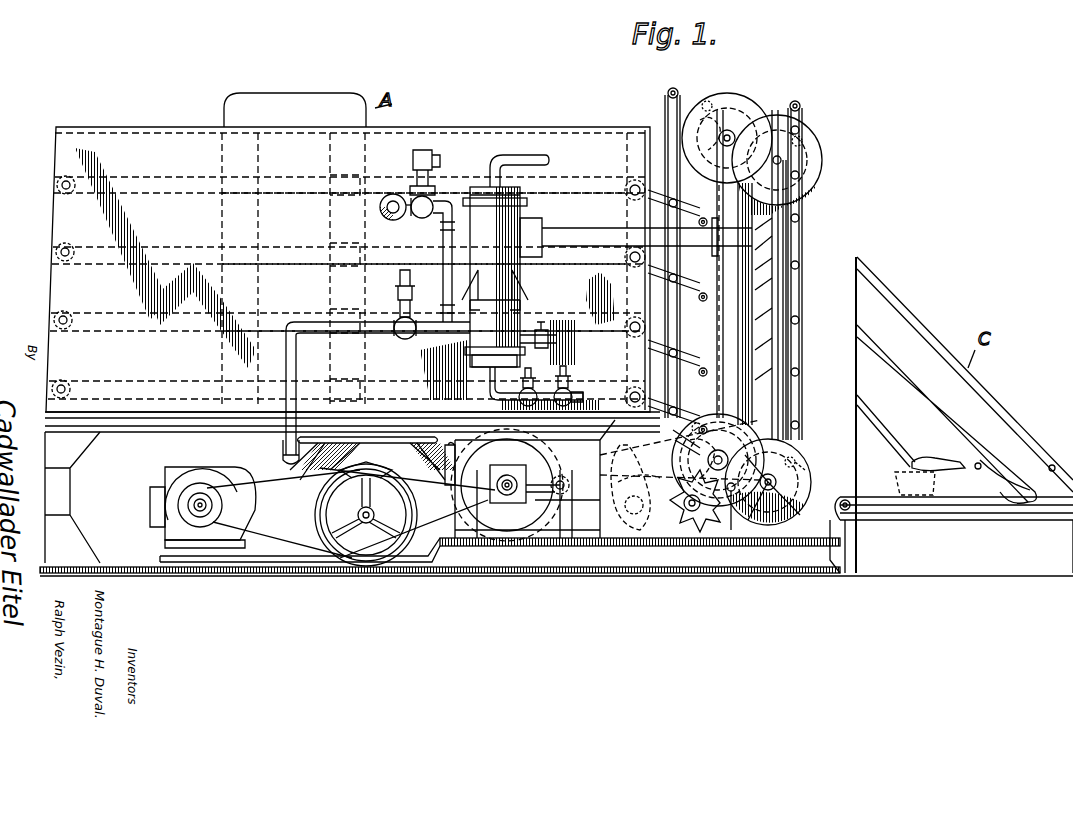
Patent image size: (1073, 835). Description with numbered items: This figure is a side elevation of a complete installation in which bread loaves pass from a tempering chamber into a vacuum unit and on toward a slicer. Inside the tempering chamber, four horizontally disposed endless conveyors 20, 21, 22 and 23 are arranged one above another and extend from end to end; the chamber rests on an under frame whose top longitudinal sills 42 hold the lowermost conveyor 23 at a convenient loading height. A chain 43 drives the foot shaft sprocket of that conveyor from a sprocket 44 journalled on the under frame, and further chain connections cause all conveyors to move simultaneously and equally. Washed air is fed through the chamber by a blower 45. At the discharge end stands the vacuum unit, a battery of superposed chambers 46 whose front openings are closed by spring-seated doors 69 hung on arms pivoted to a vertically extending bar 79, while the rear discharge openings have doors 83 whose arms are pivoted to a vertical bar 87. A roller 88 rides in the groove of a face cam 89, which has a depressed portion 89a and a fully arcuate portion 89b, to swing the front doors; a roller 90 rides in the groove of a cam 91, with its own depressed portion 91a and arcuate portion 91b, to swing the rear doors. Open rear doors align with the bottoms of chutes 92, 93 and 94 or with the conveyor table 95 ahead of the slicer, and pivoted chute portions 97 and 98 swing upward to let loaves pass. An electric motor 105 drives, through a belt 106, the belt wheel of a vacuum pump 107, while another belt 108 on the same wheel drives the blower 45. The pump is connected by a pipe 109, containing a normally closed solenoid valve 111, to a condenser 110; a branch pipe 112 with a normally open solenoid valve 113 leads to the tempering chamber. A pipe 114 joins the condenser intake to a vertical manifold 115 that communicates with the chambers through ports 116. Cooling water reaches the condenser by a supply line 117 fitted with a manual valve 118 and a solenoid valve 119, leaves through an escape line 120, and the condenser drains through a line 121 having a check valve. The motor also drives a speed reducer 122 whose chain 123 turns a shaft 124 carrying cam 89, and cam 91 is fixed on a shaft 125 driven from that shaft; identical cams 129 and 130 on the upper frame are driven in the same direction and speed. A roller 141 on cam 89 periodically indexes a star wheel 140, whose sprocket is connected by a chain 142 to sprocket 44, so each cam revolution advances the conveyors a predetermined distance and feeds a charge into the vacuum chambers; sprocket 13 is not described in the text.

The upper sprocket 13 is at (738, 112).
The endless conveyor 20 is at (290, 178).
The endless conveyor 21 is at (292, 247).
The endless conveyor 22 is at (285, 314).
The lowermost conveyor 23 is at (162, 383).
The top longitudinal sills 42 is at (128, 430).
The chain 43 is at (633, 520).
The sprocket 44 is at (618, 528).
The blower 45 is at (205, 478).
The vacuum chambers 46 is at (760, 372).
The cover plate or door 69 is at (700, 203).
The vertically extending bar 79 is at (666, 108).
The closure plate or door 83 is at (790, 322).
The vertical bar 87 is at (775, 208).
The roller 88 is at (685, 435).
The face cam 89 is at (748, 440).
The depressed portion 89a is at (690, 462).
The fully arcuate portion 89b is at (752, 420).
The roller 90 is at (795, 468).
The cam 91 is at (792, 490).
The depressed portion 91a is at (768, 540).
The fully arcuate portion 91b is at (800, 452).
The chute 92 is at (885, 290).
The chute 93 is at (875, 350).
The chute 94 is at (880, 425).
The conveyor table 95 is at (972, 508).
The pivoted portion 97 is at (1003, 475).
The pivoted portion 98 is at (925, 462).
The electric motor 105 is at (508, 520).
The belt 106 is at (378, 560).
The vacuum pump 107 is at (312, 482).
The belt 108 is at (290, 540).
The pipe 109 is at (292, 372).
The condenser 110 is at (522, 316).
The normally closed solenoid operated valve 111 is at (404, 340).
The pipe 112 is at (443, 232).
The normally open solenoid operated valve 113 is at (428, 200).
The pipe 114 is at (590, 225).
The manifold 115 is at (762, 292).
The ports 116 is at (765, 240).
The cooling water supply line 117 is at (580, 395).
The manually operable valve 118 is at (565, 374).
The normally closed solenoid operated valve 119 is at (522, 448).
The escape line 120 is at (522, 156).
The condenser drainage line 121 is at (530, 335).
The speed reducer 122 is at (578, 520).
The chain 123 is at (615, 440).
The shaft 124 is at (720, 456).
The shaft 125 is at (795, 510).
The cam 129 is at (742, 130).
The cam 130 is at (803, 162).
The star wheel 140 is at (700, 525).
The roller 141 is at (733, 530).
The chain 142 is at (662, 530).